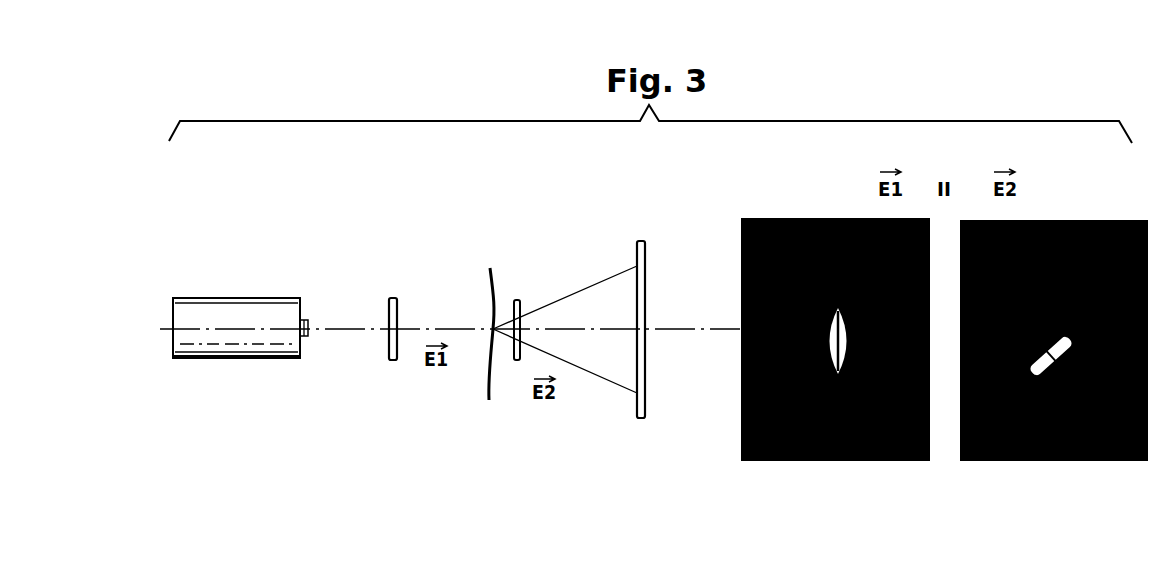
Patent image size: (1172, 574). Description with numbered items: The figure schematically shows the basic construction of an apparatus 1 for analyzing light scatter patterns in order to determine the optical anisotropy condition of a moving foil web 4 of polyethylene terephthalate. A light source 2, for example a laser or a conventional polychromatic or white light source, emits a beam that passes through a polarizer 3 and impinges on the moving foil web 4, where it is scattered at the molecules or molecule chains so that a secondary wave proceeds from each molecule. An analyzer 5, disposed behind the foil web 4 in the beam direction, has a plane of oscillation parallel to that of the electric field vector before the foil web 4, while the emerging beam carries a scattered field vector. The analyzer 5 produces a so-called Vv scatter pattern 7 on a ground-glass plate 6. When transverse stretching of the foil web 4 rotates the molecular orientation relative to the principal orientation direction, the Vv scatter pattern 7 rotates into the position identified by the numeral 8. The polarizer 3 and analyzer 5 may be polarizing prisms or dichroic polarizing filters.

The apparatus 1 is at (314, 246).
The light source 2 is at (213, 303).
The polarizer 3 is at (384, 288).
The moving foil web 4 is at (482, 260).
The analyzer 5 is at (510, 290).
The ground-glass plate 6 is at (631, 232).
The Vv scatter pattern 7 is at (797, 210).
The rotated scatter pattern position 8 is at (1066, 212).